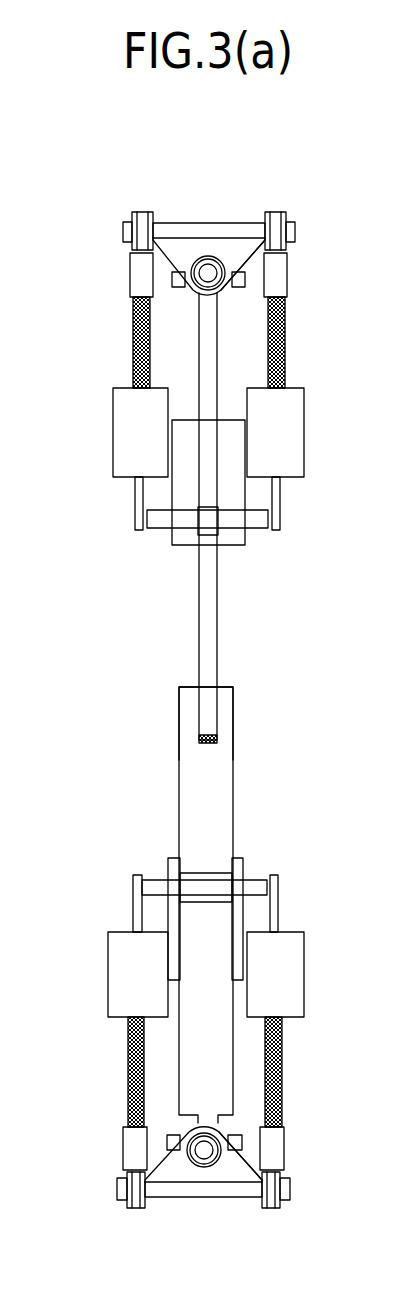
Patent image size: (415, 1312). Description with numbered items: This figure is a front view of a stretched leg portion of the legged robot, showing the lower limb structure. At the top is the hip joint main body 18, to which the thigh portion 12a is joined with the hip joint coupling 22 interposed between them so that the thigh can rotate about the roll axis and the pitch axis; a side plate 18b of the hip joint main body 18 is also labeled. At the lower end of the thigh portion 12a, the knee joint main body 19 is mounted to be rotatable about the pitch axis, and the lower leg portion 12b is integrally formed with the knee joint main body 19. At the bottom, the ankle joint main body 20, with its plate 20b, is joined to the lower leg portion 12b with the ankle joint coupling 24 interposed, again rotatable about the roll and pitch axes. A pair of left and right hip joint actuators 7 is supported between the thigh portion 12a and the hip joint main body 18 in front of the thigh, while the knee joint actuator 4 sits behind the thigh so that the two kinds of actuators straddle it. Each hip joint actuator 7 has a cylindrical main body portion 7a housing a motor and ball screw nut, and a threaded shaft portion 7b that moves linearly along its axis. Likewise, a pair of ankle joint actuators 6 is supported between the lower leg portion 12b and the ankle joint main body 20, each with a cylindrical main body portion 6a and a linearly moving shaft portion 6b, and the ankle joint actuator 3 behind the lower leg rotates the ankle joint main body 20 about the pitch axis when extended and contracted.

The hip joint main body 18 is at (178, 232).
The upper bracket side plate 18b is at (238, 252).
The hip joint coupling 22 is at (206, 256).
The hip joint actuator 7 is at (62, 323).
The main body portion 7a is at (125, 413).
The shaft portion 7b is at (133, 337).
The knee joint actuator 4 is at (233, 493).
The thigh portion 12a is at (210, 593).
The knee joint main body 19 is at (225, 718).
The lower leg portion 12b is at (222, 823).
The ankle joint actuator 3 is at (235, 912).
The ankle joint actuator 6 is at (54, 995).
The main body portion 6a is at (120, 1003).
The shaft portion 6b is at (123, 1085).
The ankle joint main body 20 is at (210, 1190).
The lower bracket side plate 20b is at (237, 1175).
The ankle joint coupling 24 is at (192, 1164).